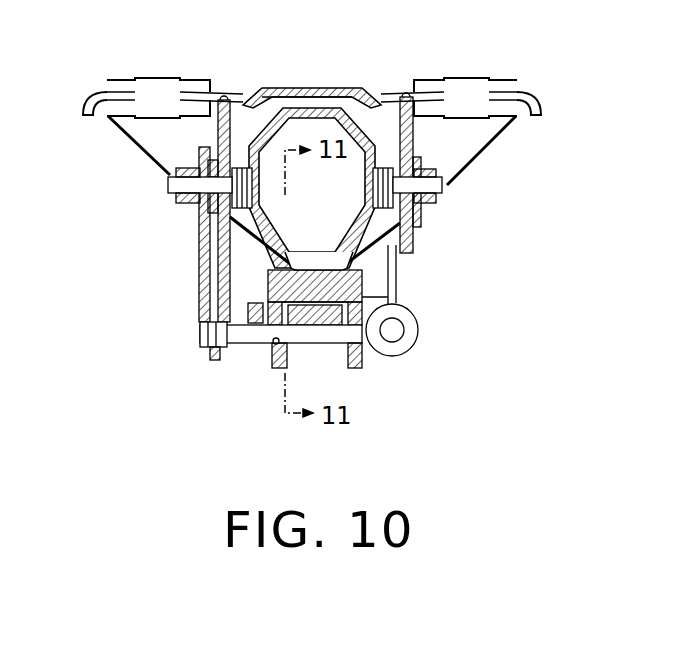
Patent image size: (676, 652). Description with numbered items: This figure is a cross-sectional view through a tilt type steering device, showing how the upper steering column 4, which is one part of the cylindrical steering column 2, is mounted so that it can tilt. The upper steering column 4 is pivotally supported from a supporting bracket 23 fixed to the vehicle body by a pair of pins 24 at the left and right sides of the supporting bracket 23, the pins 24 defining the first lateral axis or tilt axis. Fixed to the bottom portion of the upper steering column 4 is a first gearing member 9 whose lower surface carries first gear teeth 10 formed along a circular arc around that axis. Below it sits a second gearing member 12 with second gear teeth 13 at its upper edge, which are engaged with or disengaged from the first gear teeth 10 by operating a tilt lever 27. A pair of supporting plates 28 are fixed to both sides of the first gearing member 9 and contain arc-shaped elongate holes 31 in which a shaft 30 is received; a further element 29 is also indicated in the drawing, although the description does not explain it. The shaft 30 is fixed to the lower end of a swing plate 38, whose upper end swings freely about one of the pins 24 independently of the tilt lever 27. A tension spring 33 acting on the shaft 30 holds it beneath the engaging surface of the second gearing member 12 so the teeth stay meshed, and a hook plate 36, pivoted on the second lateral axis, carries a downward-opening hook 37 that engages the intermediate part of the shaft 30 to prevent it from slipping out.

The steering column 2 is at (297, 92).
The upper steering column 4 is at (325, 107).
The first gearing member 9 is at (363, 303).
The first gear teeth 10 is at (367, 312).
The second gearing member 12 is at (317, 322).
The second gear teeth 13 is at (310, 323).
The supporting bracket 23 is at (415, 141).
The pins 24 is at (167, 190).
The tilt lever 27 is at (197, 246).
The supporting plates 28 is at (360, 360).
The link 29 is at (365, 278).
The shaft 30 is at (253, 340).
The elongate holes 31 is at (415, 335).
The tension spring 33 is at (198, 352).
The hook plate 36 is at (197, 318).
The hook 37 is at (245, 325).
The swing plate 38 is at (199, 290).